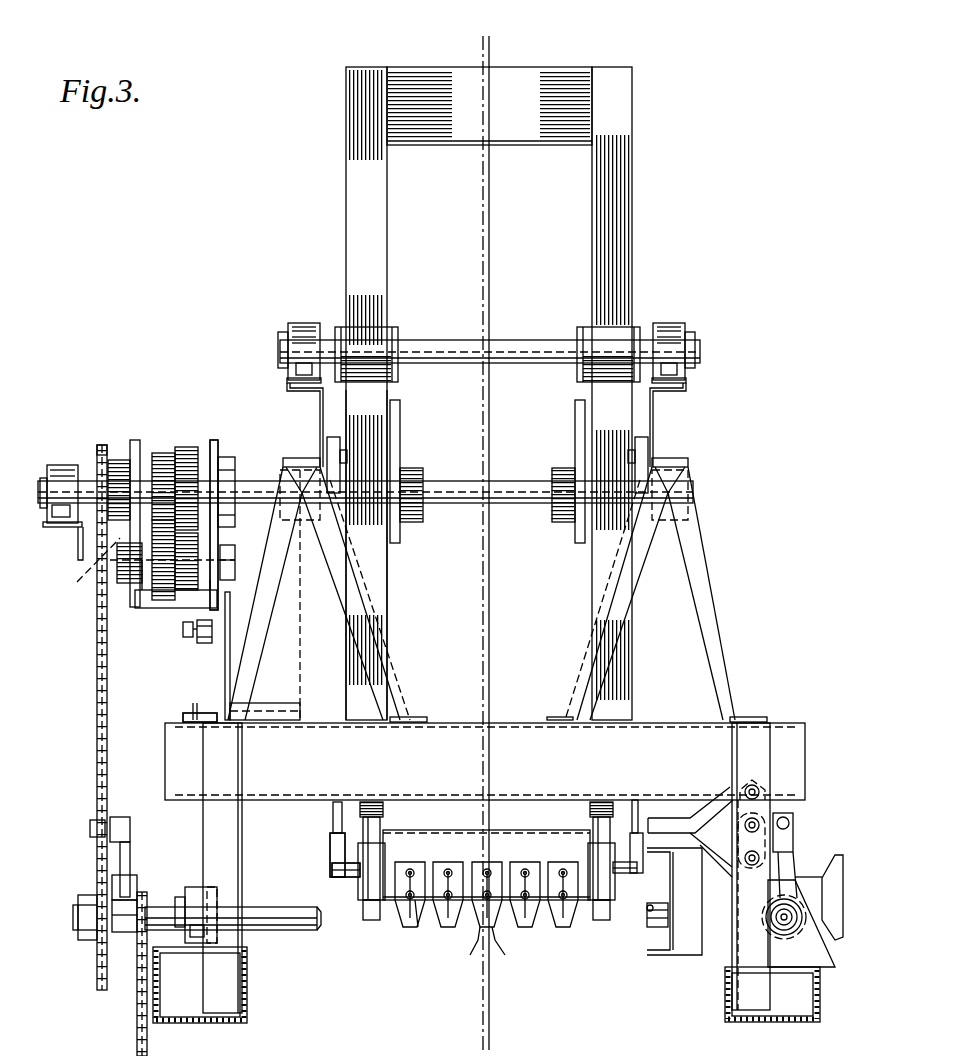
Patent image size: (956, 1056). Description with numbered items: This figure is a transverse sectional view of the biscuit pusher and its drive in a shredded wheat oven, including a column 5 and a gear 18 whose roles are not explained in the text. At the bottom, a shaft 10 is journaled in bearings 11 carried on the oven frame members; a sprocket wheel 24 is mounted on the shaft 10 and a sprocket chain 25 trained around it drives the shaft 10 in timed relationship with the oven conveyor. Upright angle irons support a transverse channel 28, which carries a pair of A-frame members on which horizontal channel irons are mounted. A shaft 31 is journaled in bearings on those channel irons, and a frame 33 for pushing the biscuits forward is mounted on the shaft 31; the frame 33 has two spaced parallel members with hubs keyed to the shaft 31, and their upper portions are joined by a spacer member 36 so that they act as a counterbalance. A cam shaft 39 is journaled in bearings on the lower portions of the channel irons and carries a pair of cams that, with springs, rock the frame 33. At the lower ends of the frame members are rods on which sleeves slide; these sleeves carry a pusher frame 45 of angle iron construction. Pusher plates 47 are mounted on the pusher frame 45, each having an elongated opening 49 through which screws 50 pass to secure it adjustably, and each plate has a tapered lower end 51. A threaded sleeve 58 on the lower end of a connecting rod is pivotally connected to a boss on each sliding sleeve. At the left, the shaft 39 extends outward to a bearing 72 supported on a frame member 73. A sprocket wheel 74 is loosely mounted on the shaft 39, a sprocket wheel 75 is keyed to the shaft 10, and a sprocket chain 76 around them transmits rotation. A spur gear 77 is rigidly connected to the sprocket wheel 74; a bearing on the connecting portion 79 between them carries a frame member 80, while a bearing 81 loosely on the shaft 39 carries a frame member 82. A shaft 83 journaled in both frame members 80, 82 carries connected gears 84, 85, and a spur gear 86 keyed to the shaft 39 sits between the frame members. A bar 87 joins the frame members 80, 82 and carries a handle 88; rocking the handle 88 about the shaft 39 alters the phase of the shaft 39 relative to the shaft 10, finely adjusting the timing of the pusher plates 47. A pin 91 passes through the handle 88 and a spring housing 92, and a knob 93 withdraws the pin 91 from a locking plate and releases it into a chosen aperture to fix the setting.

The column 5 is at (340, 413).
The shaft 10 is at (258, 910).
The bearings 11 is at (192, 885).
The gear 18 is at (122, 460).
The sprocket wheel 24 is at (123, 932).
The sprocket chain 25 is at (137, 1000).
The channel 28 is at (770, 748).
The shaft 31 is at (505, 340).
The frame 33 is at (523, 374).
The spacer member 36 is at (522, 78).
The shaft 39 is at (495, 492).
The pusher frame 45 is at (505, 845).
The pusher plates 47 is at (415, 875).
The elongated opening 49 is at (415, 920).
The screws 50 is at (408, 870).
The tapered lower ends 51 is at (510, 945).
The threaded sleeve 58 is at (330, 840).
The bearing 72 is at (78, 465).
The frame member 73 is at (78, 540).
The sprocket wheel 74 is at (97, 452).
The sprocket wheel 75 is at (90, 945).
The sprocket chain 76 is at (97, 705).
The spur gear 77 is at (160, 453).
The connecting portion 79 is at (77, 583).
The frame member 80 is at (120, 585).
The bearing 81 is at (220, 455).
The frame member 82 is at (215, 525).
The shaft 83 is at (235, 562).
The sprocket wheel 84 is at (160, 600).
The sprocket wheel 85 is at (192, 590).
The spur gear 86 is at (185, 447).
The bar 87 is at (140, 607).
The handle 88 is at (193, 703).
The pin 91 is at (195, 700).
The housing 92 is at (202, 645).
The knob 93 is at (188, 637).